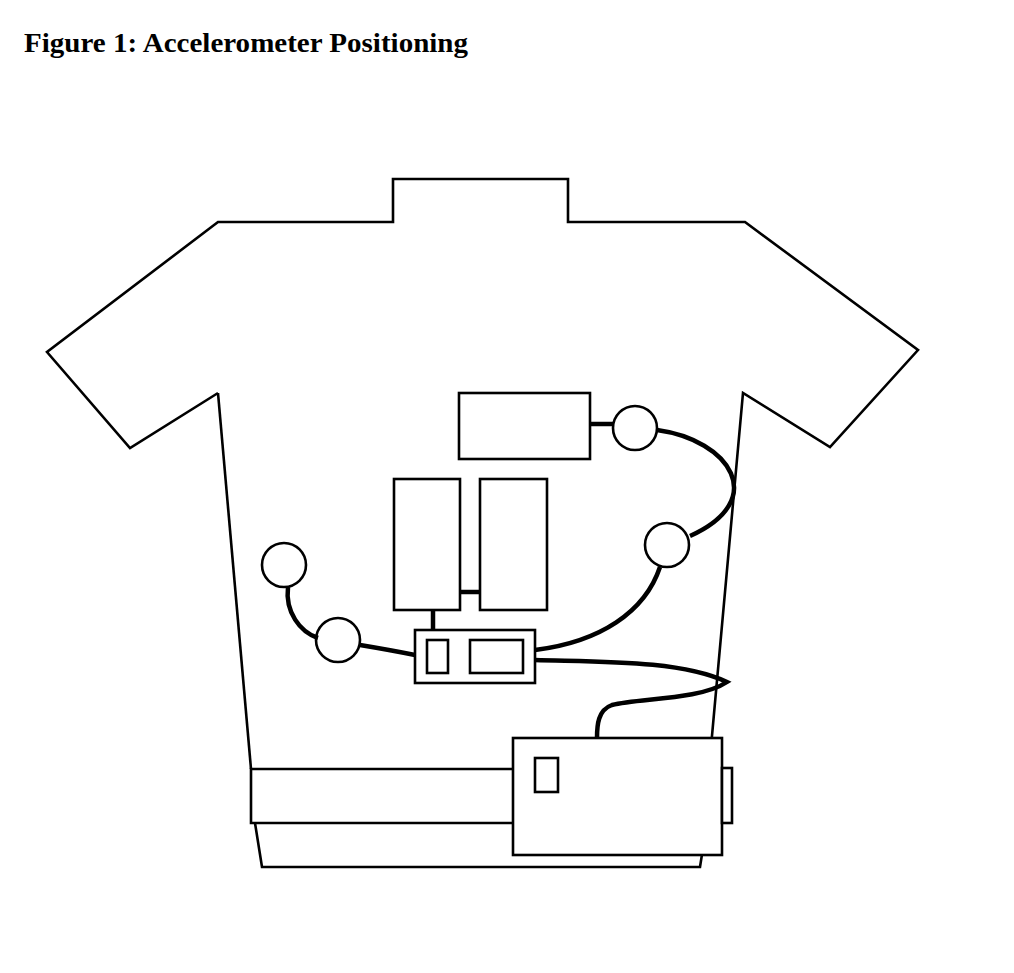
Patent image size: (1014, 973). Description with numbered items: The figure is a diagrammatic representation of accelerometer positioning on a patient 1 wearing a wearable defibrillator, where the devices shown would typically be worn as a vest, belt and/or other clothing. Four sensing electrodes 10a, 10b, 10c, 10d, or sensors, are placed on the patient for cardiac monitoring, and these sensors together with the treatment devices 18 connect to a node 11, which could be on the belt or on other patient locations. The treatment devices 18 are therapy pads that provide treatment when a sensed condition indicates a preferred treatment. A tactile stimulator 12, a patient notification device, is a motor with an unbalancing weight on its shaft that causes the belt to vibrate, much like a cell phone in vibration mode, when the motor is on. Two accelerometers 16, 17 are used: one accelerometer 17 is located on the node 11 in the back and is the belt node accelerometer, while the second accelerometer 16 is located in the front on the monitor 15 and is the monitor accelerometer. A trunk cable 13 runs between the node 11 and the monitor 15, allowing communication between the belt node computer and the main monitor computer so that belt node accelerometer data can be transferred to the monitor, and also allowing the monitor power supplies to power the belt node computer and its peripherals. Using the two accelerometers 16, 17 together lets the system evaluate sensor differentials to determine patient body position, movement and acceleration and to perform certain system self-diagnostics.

The patient 1 is at (678, 222).
The sensing electrode 10a is at (262, 567).
The sensing electrode 10b is at (318, 650).
The sensing electrode 10c is at (652, 414).
The sensing electrode 10d is at (688, 553).
The node 11 is at (433, 667).
The tactile stimulator 12 is at (480, 673).
The trunk cable 13 is at (727, 682).
The monitor 15 is at (722, 745).
The accelerometer 16 is at (547, 795).
The accelerometer 17 is at (418, 672).
The treatment devices 18 is at (393, 545).